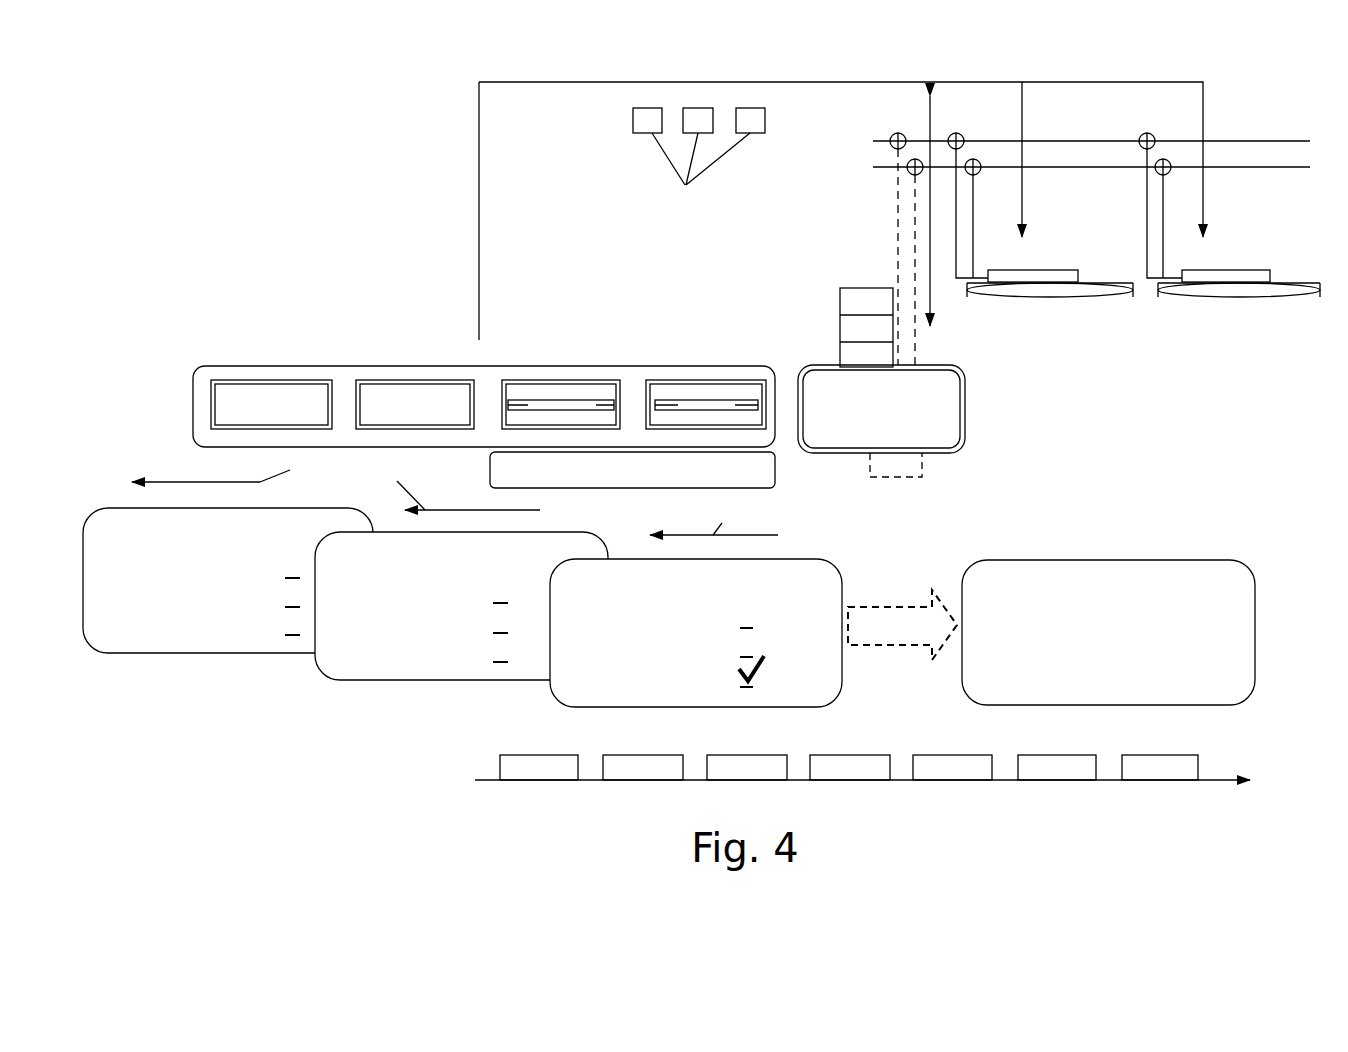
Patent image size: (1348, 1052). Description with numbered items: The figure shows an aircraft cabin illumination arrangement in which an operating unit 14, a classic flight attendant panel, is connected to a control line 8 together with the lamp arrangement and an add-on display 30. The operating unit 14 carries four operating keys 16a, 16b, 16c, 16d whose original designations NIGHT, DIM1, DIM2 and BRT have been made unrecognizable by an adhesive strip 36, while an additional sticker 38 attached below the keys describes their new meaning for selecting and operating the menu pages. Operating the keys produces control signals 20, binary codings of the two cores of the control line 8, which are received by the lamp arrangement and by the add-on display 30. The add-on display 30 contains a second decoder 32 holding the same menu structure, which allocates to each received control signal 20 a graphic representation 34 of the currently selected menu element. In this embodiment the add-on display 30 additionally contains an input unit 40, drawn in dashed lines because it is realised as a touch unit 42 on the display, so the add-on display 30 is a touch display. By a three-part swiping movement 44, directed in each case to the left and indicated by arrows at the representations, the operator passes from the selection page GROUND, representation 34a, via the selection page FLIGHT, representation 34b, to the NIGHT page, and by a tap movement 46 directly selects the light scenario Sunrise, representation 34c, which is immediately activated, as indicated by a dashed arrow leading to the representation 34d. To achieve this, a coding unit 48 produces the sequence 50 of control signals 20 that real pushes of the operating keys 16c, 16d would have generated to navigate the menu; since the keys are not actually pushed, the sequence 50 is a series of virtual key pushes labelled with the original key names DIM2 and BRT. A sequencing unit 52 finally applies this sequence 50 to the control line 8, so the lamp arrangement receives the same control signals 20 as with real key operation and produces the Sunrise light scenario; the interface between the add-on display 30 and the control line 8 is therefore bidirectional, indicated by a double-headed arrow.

The control line 8 is at (838, 175).
The operating unit 14 is at (232, 363).
The operating key (NIGHT) 16a is at (271, 380).
The operating key (DIM1) 16b is at (393, 380).
The operating key (DIM2) 16c is at (604, 380).
The operating key (BRT) 16d is at (697, 380).
The control signals 20 is at (1217, 755).
The add-on display 30 is at (818, 453).
The second decoder 32 is at (840, 352).
The graphic representation 34 is at (958, 448).
The representation of selection page GROUND 34a is at (335, 507).
The representation of selection page FLIGHT 34b is at (545, 532).
The representation of light scenario Sunrise 34c is at (798, 558).
The graphic representation 34d is at (1133, 560).
The adhesive strip 36 is at (512, 400).
The additional sticker 38 is at (488, 467).
The input unit 40 is at (908, 478).
The touch unit 42 is at (900, 410).
The swiping movement 44 is at (455, 495).
The tap movement 46 is at (653, 683).
The coding unit 48 is at (840, 320).
The sequence 50 is at (615, 150).
The sequencing unit 52 is at (880, 288).